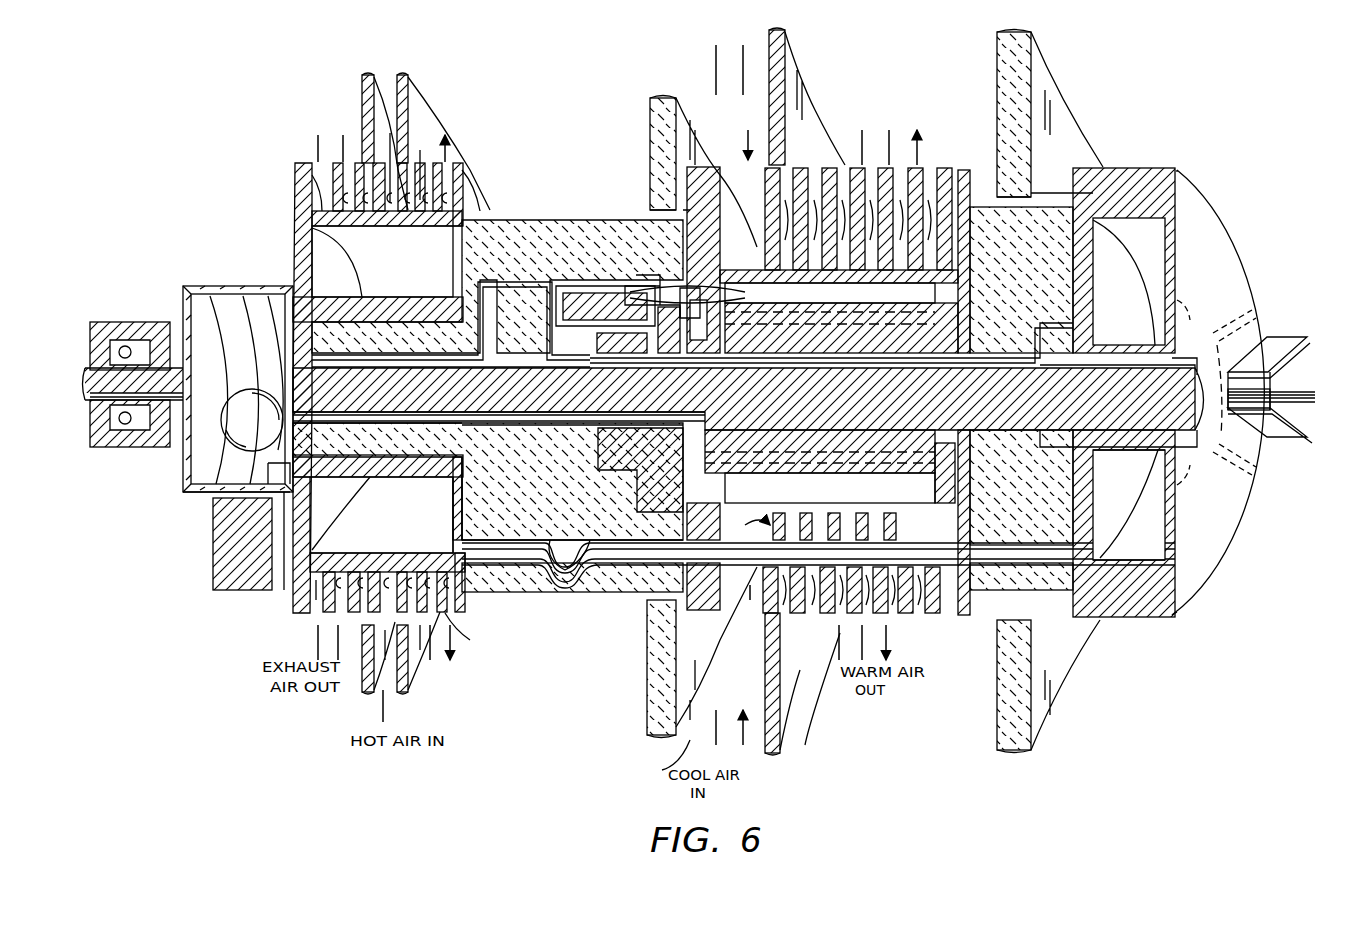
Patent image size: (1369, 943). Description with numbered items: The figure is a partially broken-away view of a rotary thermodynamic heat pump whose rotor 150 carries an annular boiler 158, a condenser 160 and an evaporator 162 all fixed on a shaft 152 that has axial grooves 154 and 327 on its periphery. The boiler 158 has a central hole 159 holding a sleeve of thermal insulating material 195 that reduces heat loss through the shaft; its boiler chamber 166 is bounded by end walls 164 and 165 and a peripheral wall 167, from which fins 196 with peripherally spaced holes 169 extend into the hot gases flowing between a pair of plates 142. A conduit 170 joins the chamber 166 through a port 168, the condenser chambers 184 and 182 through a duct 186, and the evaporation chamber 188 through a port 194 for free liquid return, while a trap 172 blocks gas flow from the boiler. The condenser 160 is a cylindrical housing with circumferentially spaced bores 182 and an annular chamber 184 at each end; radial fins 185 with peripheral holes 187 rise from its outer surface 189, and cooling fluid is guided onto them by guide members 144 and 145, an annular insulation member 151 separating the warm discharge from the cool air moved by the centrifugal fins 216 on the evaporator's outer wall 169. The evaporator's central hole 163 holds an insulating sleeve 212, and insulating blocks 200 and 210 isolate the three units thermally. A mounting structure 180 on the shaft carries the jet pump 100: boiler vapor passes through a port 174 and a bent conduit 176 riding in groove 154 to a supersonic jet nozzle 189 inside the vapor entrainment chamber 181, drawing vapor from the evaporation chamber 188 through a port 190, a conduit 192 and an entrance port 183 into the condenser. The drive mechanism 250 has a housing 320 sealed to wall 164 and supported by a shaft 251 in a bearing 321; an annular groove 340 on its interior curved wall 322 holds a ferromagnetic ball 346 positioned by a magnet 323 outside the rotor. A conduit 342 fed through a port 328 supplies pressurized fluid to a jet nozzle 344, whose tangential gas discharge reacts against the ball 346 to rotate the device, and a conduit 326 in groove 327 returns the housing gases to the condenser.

The jet pump 100 is at (669, 272).
The plates 142 is at (385, 692).
The guide member 144 is at (647, 700).
The guide member 145 is at (782, 738).
The rotor 150 is at (1140, 135).
The annular insulation member 151 is at (1040, 735).
The shaft 152 is at (1216, 422).
The axial groove 154 is at (1200, 360).
The boiler 158 is at (270, 603).
The central hole 159 is at (462, 440).
The condenser 160 is at (913, 60).
The evaporator 162 is at (1200, 613).
The central hole 163 is at (1182, 350).
The end wall 164 is at (294, 246).
The end wall 165 is at (458, 490).
The boiler chamber 166 is at (462, 512).
The peripheral wall 167 is at (448, 553).
The port 168 is at (462, 540).
The peripherally spaced holes 169 is at (368, 605).
The conduit 170 is at (510, 590).
The trap 172 is at (590, 590).
The port 174 is at (470, 278).
The conduit 176 is at (480, 287).
The mounting structure 180 is at (650, 275).
The vapor entrainment chamber 181 is at (655, 290).
The bores 182 is at (885, 455).
The entrance port 183 is at (603, 320).
The annular chamber 184 is at (705, 462).
The radial fins 185 is at (716, 318).
The duct 186 is at (668, 318).
The peripheral holes 187 is at (940, 235).
The evaporation chamber 188 is at (1150, 528).
The supersonic jet nozzle 189 is at (688, 300).
The port 190 is at (725, 296).
The conduit 192 is at (1040, 325).
The port 194 is at (1115, 558).
The sleeve of thermal insulating material 195 is at (425, 462).
The fins 196 is at (458, 632).
The cylindrical block of insulating material 200 is at (488, 507).
The cylindrical block of insulating material 210 is at (1075, 478).
The sleeve of thermal insulating material 212 is at (1185, 450).
The centrifugal fins 216 is at (1290, 338).
The drive mechanism 250 is at (175, 414).
The shaft 251 is at (108, 357).
The housing 320 is at (232, 292).
The bearing 321 is at (135, 404).
The interior curved wall 322 is at (215, 310).
The magnet 323 is at (213, 525).
The conduit 326 is at (348, 415).
The groove 327 is at (732, 425).
The port 328 is at (315, 512).
The annular groove 340 is at (205, 488).
The conduit 342 is at (300, 478).
The jet nozzle 344 is at (300, 440).
The ferromagnetic ball 346 is at (228, 432).